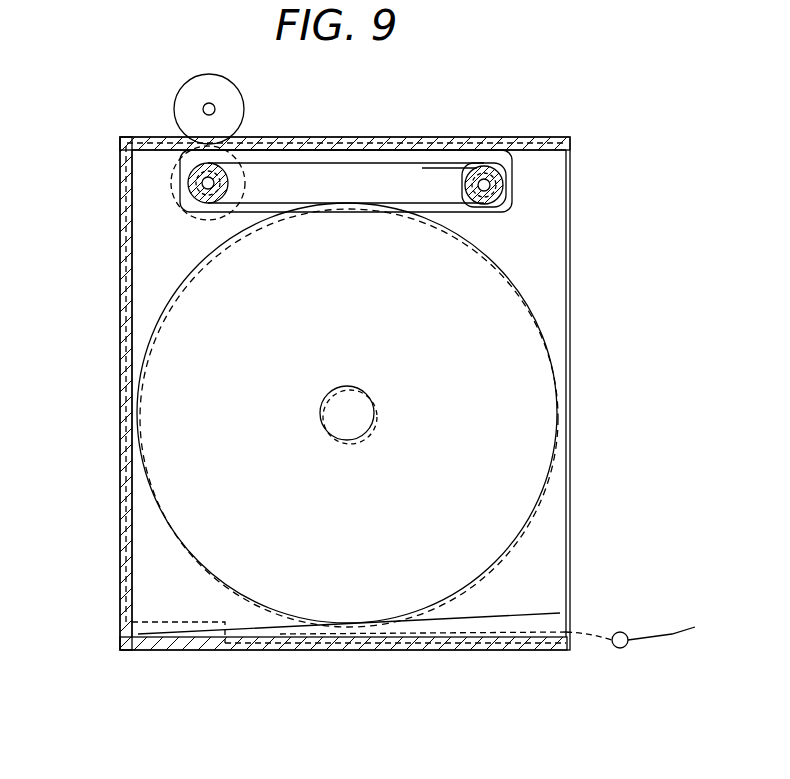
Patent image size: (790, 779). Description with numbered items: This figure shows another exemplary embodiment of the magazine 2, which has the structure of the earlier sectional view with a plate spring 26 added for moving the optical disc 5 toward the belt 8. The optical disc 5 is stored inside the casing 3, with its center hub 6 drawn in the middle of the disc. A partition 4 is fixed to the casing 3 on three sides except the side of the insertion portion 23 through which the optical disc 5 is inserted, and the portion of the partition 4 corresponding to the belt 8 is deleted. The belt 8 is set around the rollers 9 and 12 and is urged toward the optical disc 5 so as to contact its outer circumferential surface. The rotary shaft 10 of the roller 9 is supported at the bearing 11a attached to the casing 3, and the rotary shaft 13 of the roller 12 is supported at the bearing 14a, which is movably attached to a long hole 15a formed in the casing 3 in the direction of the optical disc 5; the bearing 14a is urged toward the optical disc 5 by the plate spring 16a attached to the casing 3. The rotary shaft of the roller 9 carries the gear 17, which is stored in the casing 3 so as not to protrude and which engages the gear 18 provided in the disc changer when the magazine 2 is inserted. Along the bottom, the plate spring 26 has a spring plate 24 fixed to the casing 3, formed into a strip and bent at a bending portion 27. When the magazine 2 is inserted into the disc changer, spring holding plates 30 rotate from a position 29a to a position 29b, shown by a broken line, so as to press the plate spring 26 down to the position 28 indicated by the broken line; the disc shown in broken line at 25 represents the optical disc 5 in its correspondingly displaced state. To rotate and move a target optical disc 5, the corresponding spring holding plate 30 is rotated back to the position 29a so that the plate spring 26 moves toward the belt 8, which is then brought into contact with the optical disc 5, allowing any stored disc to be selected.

The magazine 2 is at (118, 362).
The casing 3 is at (125, 408).
The partition 4 is at (132, 473).
The optical disc 5 is at (535, 413).
The hub 6 is at (372, 413).
The belt 8 is at (372, 163).
The roller 9 is at (207, 208).
The rotary shaft 10 is at (188, 183).
The bearing 11a is at (207, 182).
The roller 12 is at (503, 212).
The rotary shaft 13 is at (497, 170).
The bearing 14a is at (503, 185).
The long hole 15a is at (485, 165).
The plate spring 16a is at (432, 168).
The gear 17 is at (173, 172).
The gear 18 is at (174, 107).
The insertion portion 23 is at (570, 338).
The spring plate 24 is at (157, 638).
The disk displaced position 25 is at (528, 530).
The plate spring 26 is at (453, 630).
The bending portion 27 is at (208, 640).
The position 28 is at (535, 634).
The position 29a is at (675, 632).
The position 29b is at (603, 633).
The spring holding plate 30 is at (618, 648).